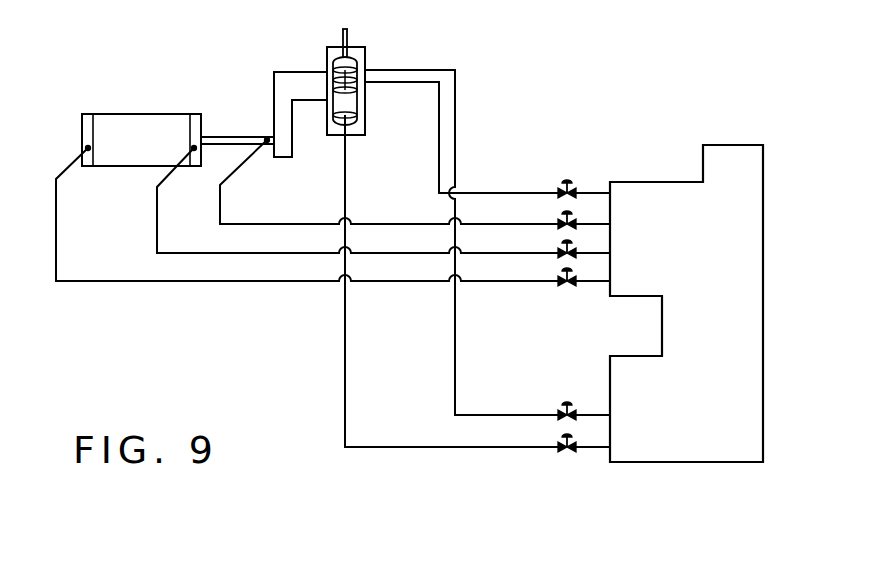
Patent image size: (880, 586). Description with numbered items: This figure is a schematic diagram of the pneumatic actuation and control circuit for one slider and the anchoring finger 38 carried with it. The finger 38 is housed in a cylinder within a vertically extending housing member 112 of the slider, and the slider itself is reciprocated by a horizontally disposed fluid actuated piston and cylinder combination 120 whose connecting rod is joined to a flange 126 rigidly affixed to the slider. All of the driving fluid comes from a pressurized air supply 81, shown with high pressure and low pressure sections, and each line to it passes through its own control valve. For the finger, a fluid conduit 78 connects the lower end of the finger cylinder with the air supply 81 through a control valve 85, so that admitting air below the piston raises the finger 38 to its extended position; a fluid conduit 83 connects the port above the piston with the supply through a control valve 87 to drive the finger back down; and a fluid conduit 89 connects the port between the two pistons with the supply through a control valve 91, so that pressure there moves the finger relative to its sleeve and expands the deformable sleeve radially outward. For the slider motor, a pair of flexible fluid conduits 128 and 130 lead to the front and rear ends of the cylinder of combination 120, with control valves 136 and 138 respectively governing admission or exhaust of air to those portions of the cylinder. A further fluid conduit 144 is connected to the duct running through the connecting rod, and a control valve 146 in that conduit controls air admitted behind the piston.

The fluid actuated piston and cylinder combination 120 is at (119, 106).
The flange 126 is at (275, 86).
The housing member 112 is at (367, 62).
The finger 38 is at (349, 36).
The fluid conduit 83 is at (456, 93).
The fluid conduit 89 is at (440, 128).
The fluid conduit means 78 is at (345, 187).
The fluid conduit 144 is at (221, 207).
The flexible fluid conduit 128 is at (157, 236).
The flexible fluid conduit 130 is at (57, 203).
The air supply 81 is at (703, 144).
The control valve 91 is at (560, 185).
The control valve 146 is at (562, 221).
The control valve 136 is at (562, 250).
The control valve 138 is at (562, 279).
The control valve 87 is at (560, 411).
The control valve 85 is at (560, 445).